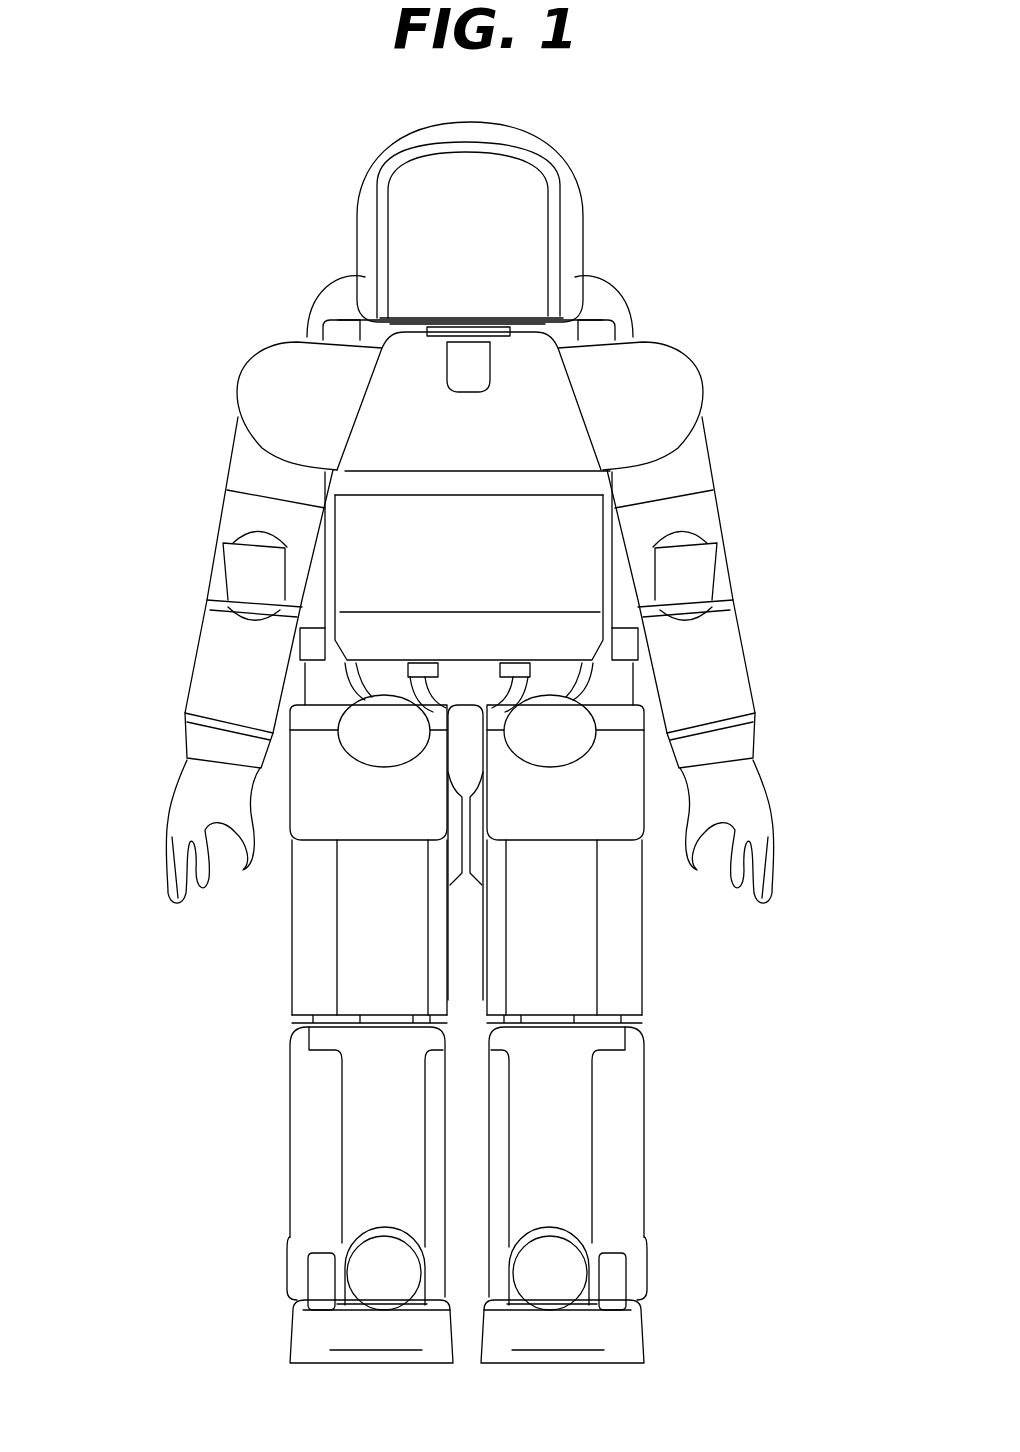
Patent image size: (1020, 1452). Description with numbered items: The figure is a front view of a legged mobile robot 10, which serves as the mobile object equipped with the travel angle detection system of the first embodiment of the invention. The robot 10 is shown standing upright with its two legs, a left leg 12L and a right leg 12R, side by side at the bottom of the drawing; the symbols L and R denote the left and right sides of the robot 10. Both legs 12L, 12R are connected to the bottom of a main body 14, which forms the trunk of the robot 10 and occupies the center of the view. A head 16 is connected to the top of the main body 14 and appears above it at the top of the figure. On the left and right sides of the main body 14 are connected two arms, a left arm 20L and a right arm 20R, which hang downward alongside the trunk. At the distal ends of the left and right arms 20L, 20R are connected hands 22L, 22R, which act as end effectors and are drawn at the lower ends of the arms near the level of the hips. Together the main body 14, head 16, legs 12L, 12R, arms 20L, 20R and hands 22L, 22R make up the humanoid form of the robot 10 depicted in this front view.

The legged mobile robot 10 is at (632, 250).
The right leg 12R is at (270, 1022).
The left leg 12L is at (663, 1057).
The main body 14 is at (585, 585).
The head 16 is at (557, 152).
The right arm 20R is at (207, 438).
The left arm 20L is at (732, 448).
The right hand 22R is at (173, 817).
The left hand 22L is at (755, 800).